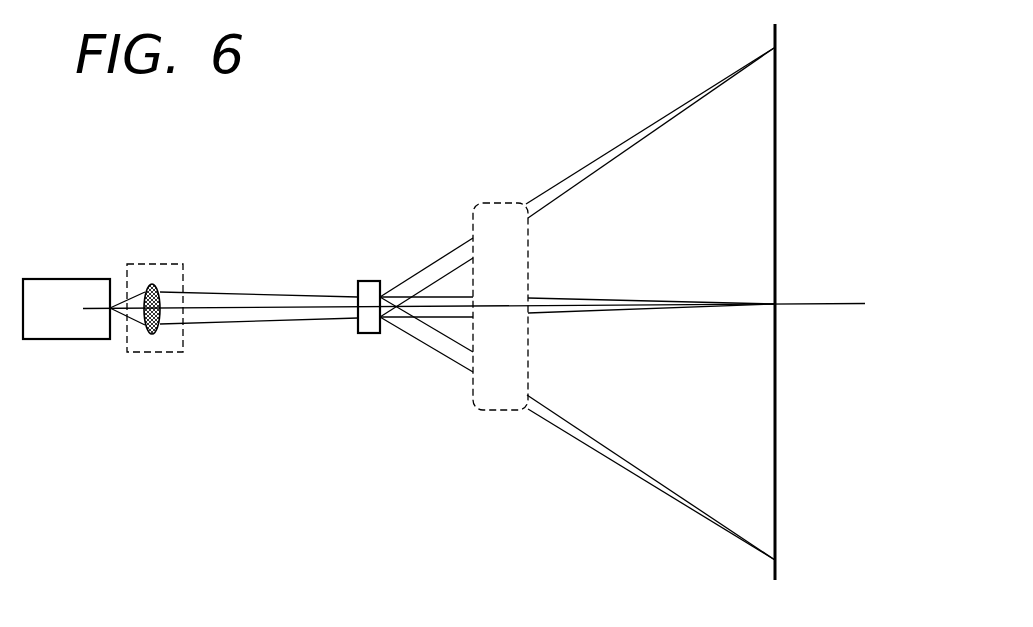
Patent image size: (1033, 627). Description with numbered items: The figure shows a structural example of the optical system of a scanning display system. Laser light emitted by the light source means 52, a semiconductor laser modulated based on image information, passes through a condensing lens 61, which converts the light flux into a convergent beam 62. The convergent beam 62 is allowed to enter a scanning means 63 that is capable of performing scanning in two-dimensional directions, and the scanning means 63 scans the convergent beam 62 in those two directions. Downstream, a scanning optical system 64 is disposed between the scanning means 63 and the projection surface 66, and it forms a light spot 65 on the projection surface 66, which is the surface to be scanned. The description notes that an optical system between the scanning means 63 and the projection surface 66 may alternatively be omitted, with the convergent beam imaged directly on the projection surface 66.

The light source means 52 is at (108, 320).
The condensing lens 61 is at (162, 265).
The convergent beam 62 is at (232, 317).
The scanning means 63 is at (366, 292).
The scanning optical system 64 is at (493, 223).
The light spot 65 is at (772, 48).
The projection surface 66 is at (775, 186).